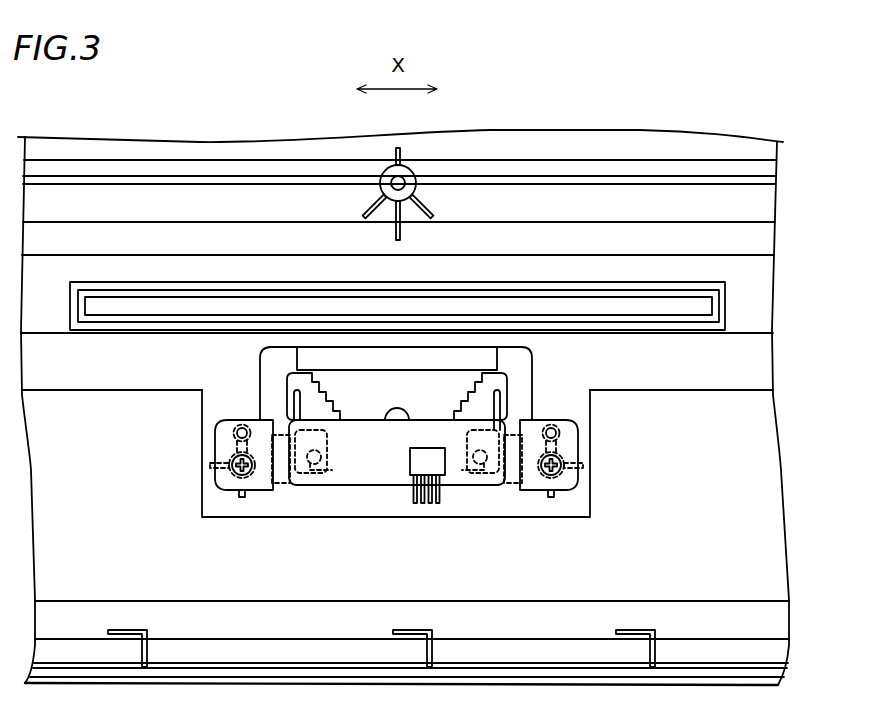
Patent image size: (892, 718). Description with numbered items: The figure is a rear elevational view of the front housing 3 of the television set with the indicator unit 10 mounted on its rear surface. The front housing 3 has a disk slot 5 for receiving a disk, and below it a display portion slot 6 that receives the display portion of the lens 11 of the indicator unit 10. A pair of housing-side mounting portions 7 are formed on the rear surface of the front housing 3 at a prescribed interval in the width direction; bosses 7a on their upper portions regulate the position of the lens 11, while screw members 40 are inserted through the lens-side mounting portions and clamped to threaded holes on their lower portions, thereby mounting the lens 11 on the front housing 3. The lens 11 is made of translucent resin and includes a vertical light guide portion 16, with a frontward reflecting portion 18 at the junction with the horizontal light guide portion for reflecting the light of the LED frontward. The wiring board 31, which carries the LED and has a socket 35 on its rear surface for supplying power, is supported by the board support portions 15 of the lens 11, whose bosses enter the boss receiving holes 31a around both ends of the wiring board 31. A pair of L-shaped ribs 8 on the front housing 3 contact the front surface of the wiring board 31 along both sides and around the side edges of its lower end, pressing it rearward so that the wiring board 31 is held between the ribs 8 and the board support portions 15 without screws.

The front housing 3 is at (710, 202).
The disk slot 5 is at (517, 302).
The display portion slot 6 is at (300, 335).
The housing-side mounting portions 7 is at (229, 481).
The bosses 7a is at (237, 433).
The L-shaped ribs 8 is at (298, 408).
The indicator unit 10 is at (282, 510).
The lens 11 is at (515, 370).
The board support portions 15 is at (307, 487).
The vertical light guide portion 16 is at (443, 407).
The frontward reflecting portion 18 is at (486, 360).
The wiring board 31 is at (357, 462).
The boss receiving holes 31a is at (312, 478).
The socket 35 is at (408, 468).
The screw members 40 is at (232, 462).